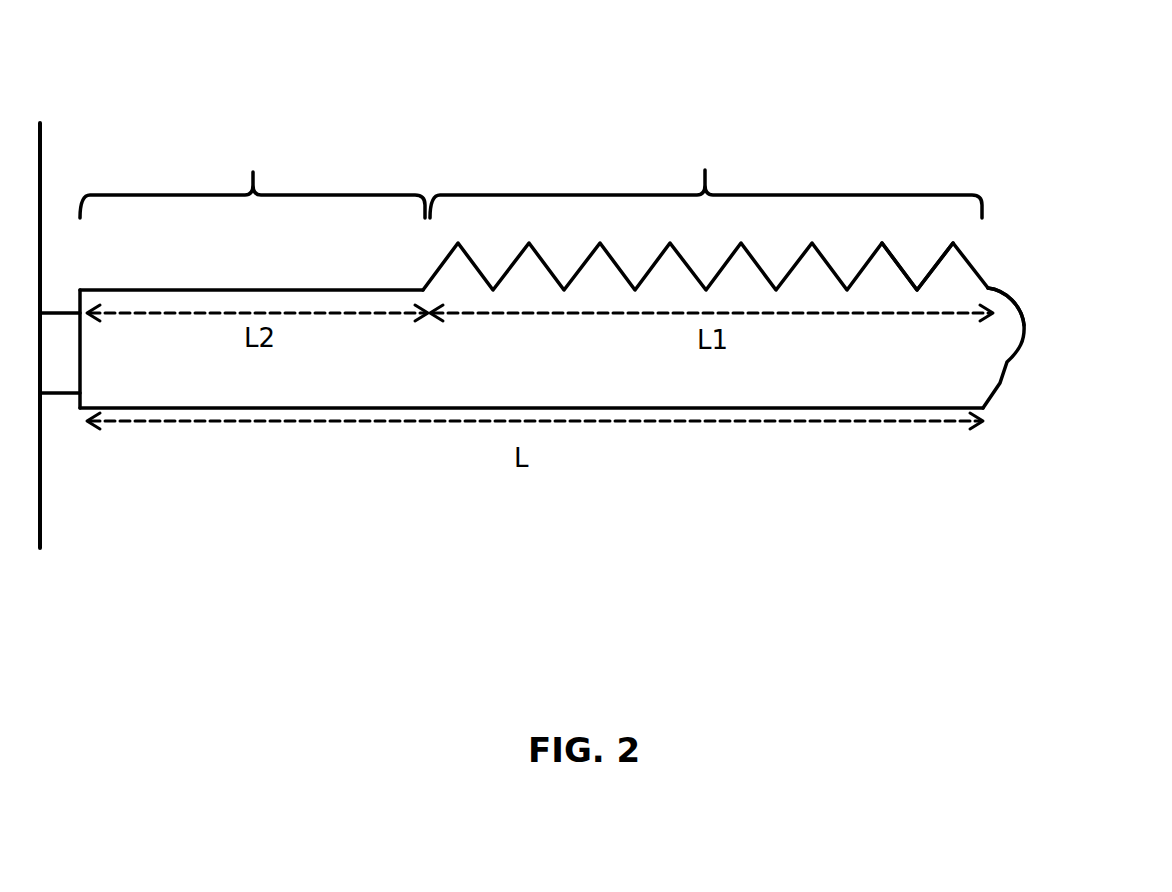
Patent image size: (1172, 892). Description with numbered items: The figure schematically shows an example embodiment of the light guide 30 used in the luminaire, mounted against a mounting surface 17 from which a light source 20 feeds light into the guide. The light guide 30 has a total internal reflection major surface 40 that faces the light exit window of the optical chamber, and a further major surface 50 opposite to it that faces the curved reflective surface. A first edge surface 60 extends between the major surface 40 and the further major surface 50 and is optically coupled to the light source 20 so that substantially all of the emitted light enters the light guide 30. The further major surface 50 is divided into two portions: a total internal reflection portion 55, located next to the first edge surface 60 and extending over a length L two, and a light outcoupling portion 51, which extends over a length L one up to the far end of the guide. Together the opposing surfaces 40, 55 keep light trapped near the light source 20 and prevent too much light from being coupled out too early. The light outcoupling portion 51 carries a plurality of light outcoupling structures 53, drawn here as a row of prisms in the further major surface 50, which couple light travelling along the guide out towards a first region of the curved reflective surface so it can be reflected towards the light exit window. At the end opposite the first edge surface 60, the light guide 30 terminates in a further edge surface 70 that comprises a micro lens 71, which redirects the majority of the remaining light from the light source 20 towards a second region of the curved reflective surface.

The mounting surface 17 is at (40, 147).
The light source 20 is at (58, 387).
The light guide 30 is at (611, 335).
The total internal reflection major surface 40 is at (392, 407).
The further major surface 50 is at (332, 293).
The light outcoupling portion 51 is at (705, 212).
The light outcoupling structure 53 is at (887, 268).
The total internal reflection portion 55 is at (252, 177).
The first edge surface 60 is at (80, 388).
The further edge surface 70 is at (997, 385).
The micro lens 71 is at (1018, 324).